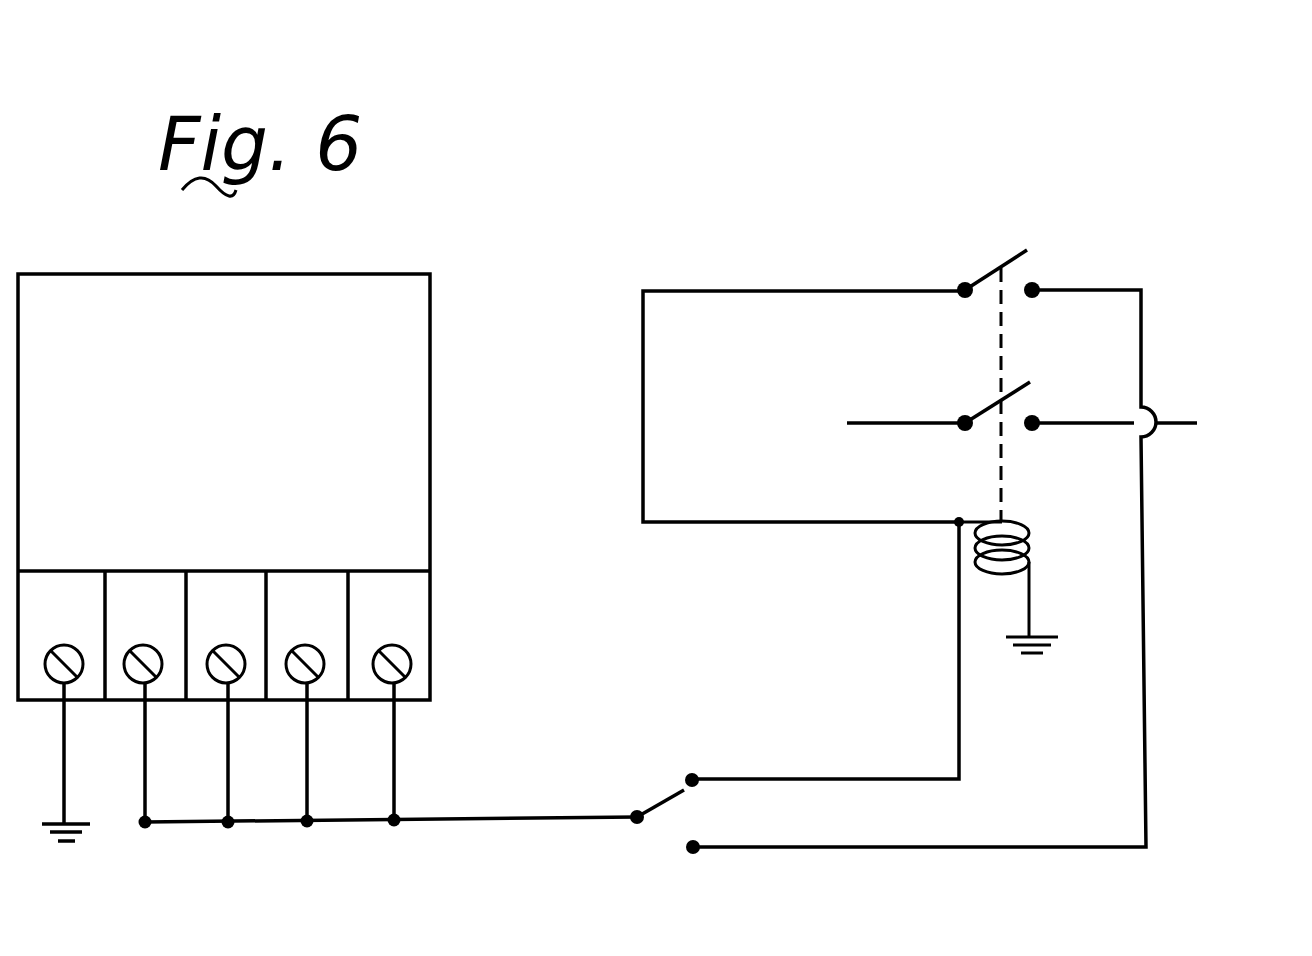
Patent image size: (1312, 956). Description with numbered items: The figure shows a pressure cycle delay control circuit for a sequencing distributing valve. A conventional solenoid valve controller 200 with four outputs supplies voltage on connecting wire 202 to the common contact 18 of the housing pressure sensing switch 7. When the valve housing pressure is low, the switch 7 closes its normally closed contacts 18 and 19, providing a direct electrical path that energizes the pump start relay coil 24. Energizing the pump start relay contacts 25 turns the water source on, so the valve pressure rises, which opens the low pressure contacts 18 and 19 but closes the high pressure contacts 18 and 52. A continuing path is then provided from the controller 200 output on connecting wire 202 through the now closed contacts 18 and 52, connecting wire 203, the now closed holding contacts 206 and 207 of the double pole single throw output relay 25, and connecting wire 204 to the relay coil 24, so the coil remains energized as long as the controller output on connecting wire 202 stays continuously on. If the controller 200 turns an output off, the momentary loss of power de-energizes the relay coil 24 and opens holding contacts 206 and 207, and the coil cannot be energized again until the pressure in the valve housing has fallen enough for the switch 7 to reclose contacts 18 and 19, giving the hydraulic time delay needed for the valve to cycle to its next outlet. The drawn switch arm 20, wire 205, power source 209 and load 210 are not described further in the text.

The controller 200 is at (432, 296).
The connecting wire 202 is at (518, 820).
The connecting wire 203 is at (928, 847).
The connecting wire 204 is at (804, 406).
The conductor to normally closed contact 205 is at (820, 778).
The holding contact 206 is at (969, 303).
The holding contact 207 is at (1036, 287).
The power source 209 is at (801, 408).
The load 210 is at (1225, 402).
The pump start relay coil 24 is at (1031, 560).
The double pole single throw output relay 25 is at (1005, 379).
The housing pressure sensing switch 7 is at (620, 807).
The common contact 18 is at (632, 810).
The normally closed contact 19 is at (698, 775).
The switch arm 20 is at (668, 812).
The normally open contact 52 is at (700, 853).